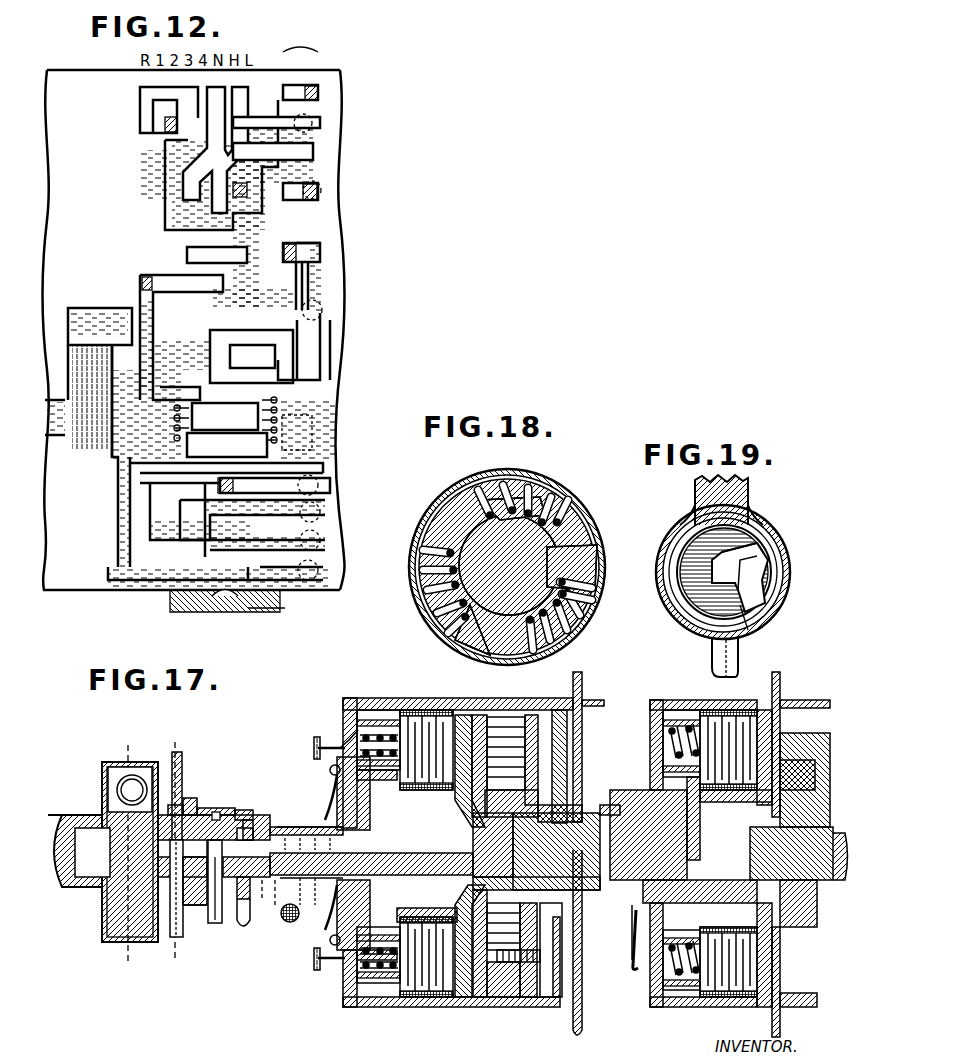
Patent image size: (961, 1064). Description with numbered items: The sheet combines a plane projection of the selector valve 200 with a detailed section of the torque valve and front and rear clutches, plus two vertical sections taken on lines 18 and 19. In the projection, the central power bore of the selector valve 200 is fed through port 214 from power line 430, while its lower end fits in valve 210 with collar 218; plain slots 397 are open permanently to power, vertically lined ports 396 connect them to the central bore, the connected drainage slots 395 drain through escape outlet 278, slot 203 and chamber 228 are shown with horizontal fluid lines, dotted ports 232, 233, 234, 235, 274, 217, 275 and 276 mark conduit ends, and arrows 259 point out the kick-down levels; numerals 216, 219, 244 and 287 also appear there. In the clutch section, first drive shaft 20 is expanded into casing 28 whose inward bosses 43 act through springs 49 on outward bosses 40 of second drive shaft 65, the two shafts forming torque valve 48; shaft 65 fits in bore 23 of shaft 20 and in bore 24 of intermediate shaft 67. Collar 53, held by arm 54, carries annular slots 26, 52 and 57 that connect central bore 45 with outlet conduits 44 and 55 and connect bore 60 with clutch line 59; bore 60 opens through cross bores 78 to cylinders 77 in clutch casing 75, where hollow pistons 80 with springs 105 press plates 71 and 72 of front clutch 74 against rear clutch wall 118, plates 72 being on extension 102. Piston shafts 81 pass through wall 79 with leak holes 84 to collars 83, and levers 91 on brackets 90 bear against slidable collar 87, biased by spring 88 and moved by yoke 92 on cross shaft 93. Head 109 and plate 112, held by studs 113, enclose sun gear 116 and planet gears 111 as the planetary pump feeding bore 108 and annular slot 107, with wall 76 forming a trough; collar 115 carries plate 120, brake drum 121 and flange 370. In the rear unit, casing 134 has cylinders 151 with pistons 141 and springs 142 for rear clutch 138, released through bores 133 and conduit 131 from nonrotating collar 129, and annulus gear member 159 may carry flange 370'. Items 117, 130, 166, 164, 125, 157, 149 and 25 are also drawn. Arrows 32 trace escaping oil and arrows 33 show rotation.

In FIG. 12, the kick-down port levels 259 is at (119, 98).
In FIG. 12, the plain slots 397 is at (150, 107).
In FIG. 12, the vertically lined ports 396 is at (237, 173).
In FIG. 12, the line 232 is at (314, 124).
In FIG. 12, the drainage slots 395 is at (237, 259).
In FIG. 12, the line 233 is at (339, 192).
In FIG. 12, the line 234 is at (346, 276).
In FIG. 12, the line 235 is at (349, 311).
In FIG. 12, the selector valve 200 is at (134, 265).
In FIG. 12, the slot 203 is at (100, 326).
In FIG. 12, the passage 216 is at (104, 400).
In FIG. 12, the line 274 is at (337, 350).
In FIG. 12, the chamber 228 is at (268, 434).
In FIG. 12, the port 217 is at (339, 432).
In FIG. 12, the valve spool 219 is at (225, 420).
In FIG. 12, the collar 218 is at (227, 445).
In FIG. 12, the outlet conduit 44 is at (125, 470).
In FIG. 19, the outlet conduit 44 is at (716, 664).
In FIG. 17, the outlet conduit 44 is at (173, 935).
In FIG. 12, the valve 210 is at (94, 507).
In FIG. 12, the port 214 is at (268, 505).
In FIG. 12, the power line 430 is at (307, 485).
In FIG. 12, the port 275 is at (288, 520).
In FIG. 12, the port 276 is at (288, 540).
In FIG. 12, the escape outlet 278 is at (322, 569).
In FIG. 12, the pump 244 is at (225, 608).
In FIG. 12, the pump housing 287 is at (286, 615).
In FIG. 18, the second drive shaft 65 is at (468, 488).
In FIG. 19, the second drive shaft 65 is at (720, 628).
In FIG. 17, the second drive shaft 65 is at (108, 859).
In FIG. 18, the inwardly extending bosses 43 is at (583, 530).
In FIG. 18, the outwardly extending bosses 40 is at (580, 575).
In FIG. 17, the outwardly extending bosses 40 is at (180, 877).
In FIG. 18, the casing 28 is at (560, 640).
In FIG. 17, the casing 28 is at (105, 777).
In FIG. 18, the arrows 33 is at (589, 484).
In FIG. 19, the arrows 33 is at (786, 503).
In FIG. 18, the hub 25 is at (665, 600).
In FIG. 19, the hub 25 is at (690, 598).
In FIG. 17, the hub 25 is at (200, 908).
In FIG. 18, the springs 49 is at (548, 655).
In FIG. 17, the springs 49 is at (190, 800).
In FIG. 19, the arm 54 is at (748, 498).
In FIG. 17, the arm 54 is at (183, 760).
In FIG. 19, the annular slot 26 is at (772, 567).
In FIG. 17, the annular slot 26 is at (187, 797).
In FIG. 19, the torque valve 48 is at (765, 590).
In FIG. 17, the torque valve 48 is at (180, 895).
In FIG. 19, the central bore 45 is at (708, 608).
In FIG. 17, the central bore 45 is at (269, 892).
In FIG. 19, the collar 53 is at (782, 604).
In FIG. 17, the collar 53 is at (246, 808).
In FIG. 19, the arrows 32 is at (750, 630).
In FIG. 17, the section line 18 is at (112, 751).
In FIG. 17, the section line 19 is at (158, 743).
In FIG. 17, the bore 23 is at (58, 882).
In FIG. 17, the first drive shaft 20 is at (63, 815).
In FIG. 17, the annular slot 52 is at (215, 808).
In FIG. 17, the annular slot 57 is at (233, 808).
In FIG. 17, the bore 60 is at (256, 808).
In FIG. 17, the outlet conduit 55 is at (222, 925).
In FIG. 17, the front clutch controlling line 59 is at (250, 922).
In FIG. 17, the cross shaft 93 is at (280, 912).
In FIG. 17, the yoke 92 is at (312, 870).
In FIG. 17, the slidable collar 87 is at (337, 800).
In FIG. 17, the central shaft 81 is at (314, 732).
In FIG. 17, the collar 83 is at (318, 746).
In FIG. 17, the brackets 90 is at (330, 768).
In FIG. 17, the levers 91 is at (330, 790).
In FIG. 17, the leak holes 84 is at (350, 735).
In FIG. 17, the casing wall 79 is at (355, 720).
In FIG. 17, the spring 88 is at (345, 895).
In FIG. 17, the cross bores 78 is at (378, 790).
In FIG. 17, the springs 105 is at (370, 705).
In FIG. 17, the clutch casing 75 is at (410, 712).
In FIG. 17, the front clutch 74 is at (425, 712).
In FIG. 17, the plates 71 is at (438, 712).
In FIG. 17, the rear clutch wall 118 is at (463, 712).
In FIG. 17, the head 109 is at (480, 712).
In FIG. 17, the annular slot 107 is at (506, 753).
In FIG. 17, the inwardly extending wall 76 is at (567, 730).
In FIG. 17, the plate 120 is at (582, 742).
In FIG. 17, the brake drum 121 is at (592, 698).
In FIG. 17, the sun gear 116 is at (545, 795).
In FIG. 17, the collar 115 is at (560, 805).
In FIG. 17, the bore 24 is at (620, 813).
In FIG. 17, the intermediate shaft 67 is at (555, 856).
In FIG. 17, the cylinders 77 is at (360, 1000).
In FIG. 17, the hollow pistons 80 is at (380, 985).
In FIG. 17, the plates 72 is at (412, 1000).
In FIG. 17, the cylindrical extension 102 is at (427, 905).
In FIG. 17, the bore 108 is at (460, 998).
In FIG. 17, the planet gears 111 is at (500, 962).
In FIG. 17, the drum 117 is at (508, 998).
In FIG. 17, the studs 113 is at (535, 998).
In FIG. 17, the plate 112 is at (560, 917).
In FIG. 17, the brake reversal flange 370 is at (543, 952).
In FIG. 17, the nonrotating collar 129 is at (632, 930).
In FIG. 17, the conduit 131 is at (632, 962).
In FIG. 17, the casing 134 is at (672, 692).
In FIG. 17, the hollow pistons 141 is at (690, 715).
In FIG. 17, the bores 133 is at (700, 770).
In FIG. 17, the drum 130 is at (710, 792).
In FIG. 17, the flange 370' is at (800, 736).
In FIG. 17, the flange 166 is at (810, 702).
In FIG. 17, the gear 164 is at (805, 780).
In FIG. 17, the shaft 125 is at (799, 853).
In FIG. 17, the cylinders 151 is at (678, 1008).
In FIG. 17, the springs 142 is at (668, 965).
In FIG. 17, the rear clutch 138 is at (720, 1000).
In FIG. 17, the gear 157 is at (795, 920).
In FIG. 17, the wall 149 is at (780, 965).
In FIG. 17, the annulus gear member 159 is at (800, 1007).